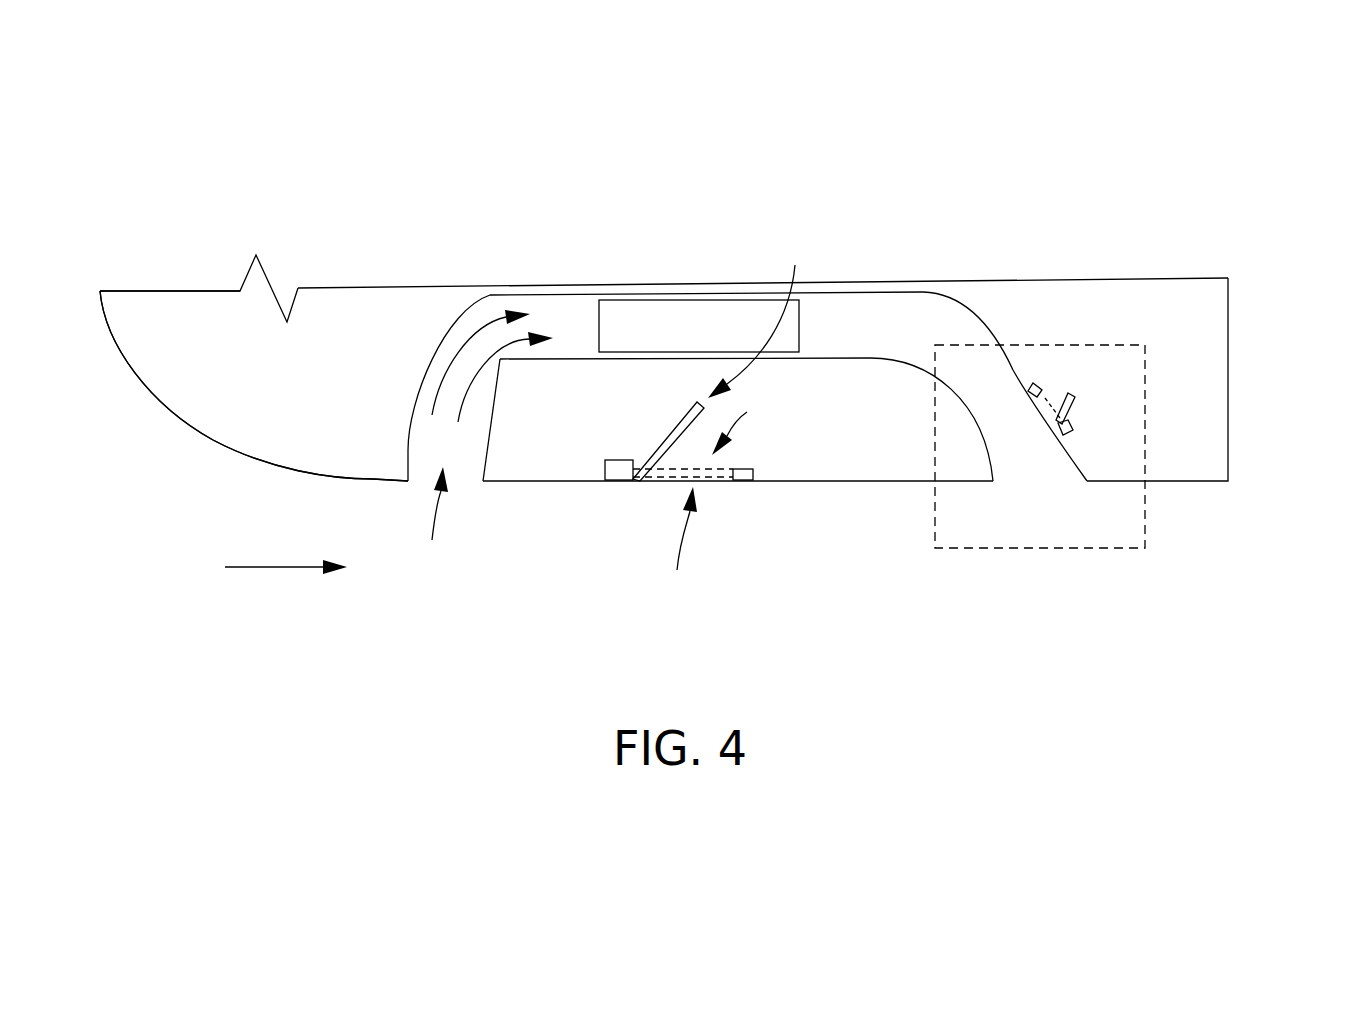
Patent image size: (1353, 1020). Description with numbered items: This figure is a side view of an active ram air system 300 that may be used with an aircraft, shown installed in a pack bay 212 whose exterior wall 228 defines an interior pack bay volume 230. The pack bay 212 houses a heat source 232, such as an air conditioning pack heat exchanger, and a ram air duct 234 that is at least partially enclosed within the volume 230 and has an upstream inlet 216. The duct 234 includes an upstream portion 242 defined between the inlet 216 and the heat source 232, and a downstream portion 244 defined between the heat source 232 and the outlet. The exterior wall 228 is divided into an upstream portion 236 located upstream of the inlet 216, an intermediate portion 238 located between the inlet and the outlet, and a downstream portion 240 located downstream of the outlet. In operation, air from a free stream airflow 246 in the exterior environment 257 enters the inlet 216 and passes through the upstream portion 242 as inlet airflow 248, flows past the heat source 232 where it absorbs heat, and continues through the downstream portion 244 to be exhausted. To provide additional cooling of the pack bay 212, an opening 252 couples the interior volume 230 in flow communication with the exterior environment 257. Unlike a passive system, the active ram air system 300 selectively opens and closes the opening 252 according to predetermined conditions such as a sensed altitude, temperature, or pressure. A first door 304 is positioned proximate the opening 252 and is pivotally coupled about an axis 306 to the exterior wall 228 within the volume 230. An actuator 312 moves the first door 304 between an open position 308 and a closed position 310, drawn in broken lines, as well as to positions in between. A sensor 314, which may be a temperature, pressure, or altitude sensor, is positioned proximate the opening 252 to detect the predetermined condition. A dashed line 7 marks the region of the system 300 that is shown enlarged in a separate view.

The active ram air system 300 is at (164, 164).
The interior pack bay volume 230 is at (315, 383).
The pack bay 212 is at (155, 287).
The exterior wall 228 is at (118, 353).
The upstream portion 236 is at (213, 440).
The upstream portion 242 is at (440, 333).
The downstream portion 244 is at (960, 303).
The downstream portion 240 is at (1228, 481).
The inlet airflow 248 is at (475, 327).
The inlet 216 is at (438, 519).
The heat source 232 is at (682, 315).
The ram air duct 234 is at (543, 359).
The intermediate portion 238 is at (803, 482).
The first door 304 is at (687, 408).
The actuator 312 is at (605, 470).
The axis 306 is at (638, 482).
The sensor 314 is at (753, 473).
The open position 308 is at (762, 318).
The closed position 310 is at (754, 422).
The opening 252 is at (672, 544).
The line 7 is at (1145, 530).
The free stream airflow 246 is at (268, 567).
The exterior environment 257 is at (410, 673).